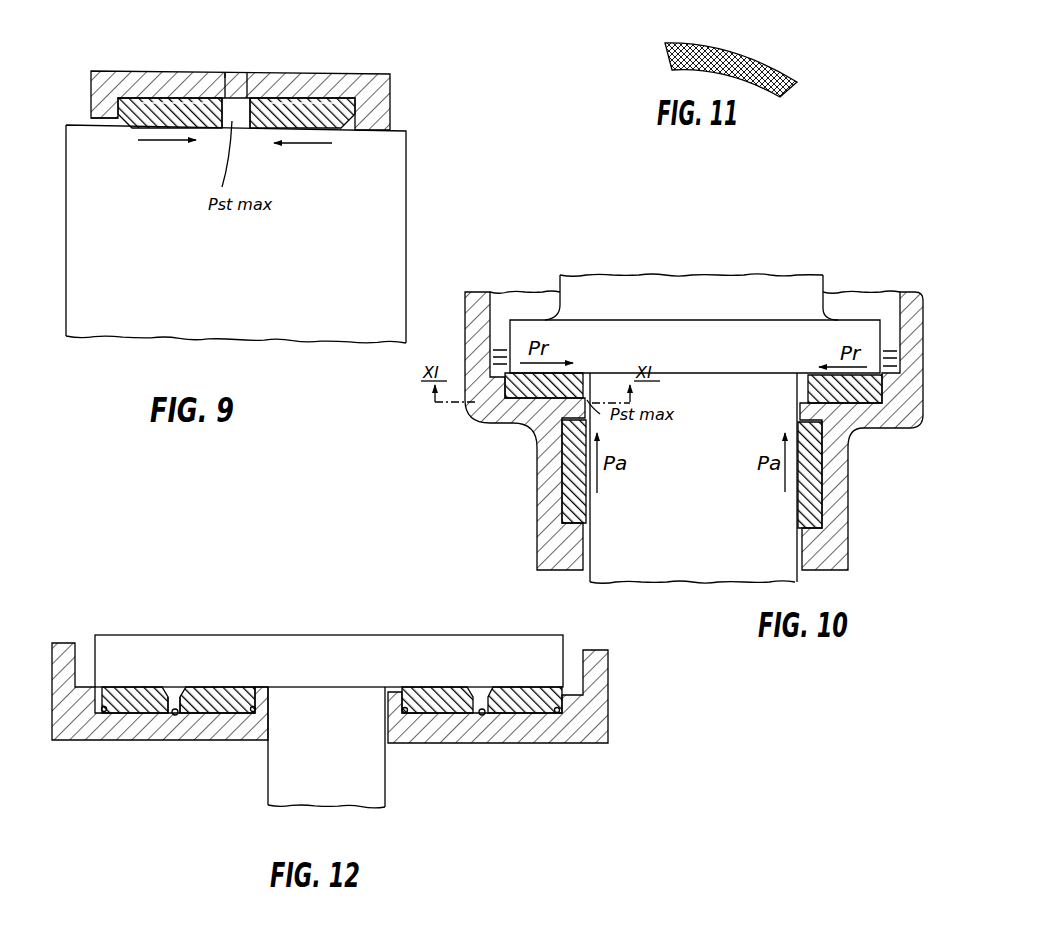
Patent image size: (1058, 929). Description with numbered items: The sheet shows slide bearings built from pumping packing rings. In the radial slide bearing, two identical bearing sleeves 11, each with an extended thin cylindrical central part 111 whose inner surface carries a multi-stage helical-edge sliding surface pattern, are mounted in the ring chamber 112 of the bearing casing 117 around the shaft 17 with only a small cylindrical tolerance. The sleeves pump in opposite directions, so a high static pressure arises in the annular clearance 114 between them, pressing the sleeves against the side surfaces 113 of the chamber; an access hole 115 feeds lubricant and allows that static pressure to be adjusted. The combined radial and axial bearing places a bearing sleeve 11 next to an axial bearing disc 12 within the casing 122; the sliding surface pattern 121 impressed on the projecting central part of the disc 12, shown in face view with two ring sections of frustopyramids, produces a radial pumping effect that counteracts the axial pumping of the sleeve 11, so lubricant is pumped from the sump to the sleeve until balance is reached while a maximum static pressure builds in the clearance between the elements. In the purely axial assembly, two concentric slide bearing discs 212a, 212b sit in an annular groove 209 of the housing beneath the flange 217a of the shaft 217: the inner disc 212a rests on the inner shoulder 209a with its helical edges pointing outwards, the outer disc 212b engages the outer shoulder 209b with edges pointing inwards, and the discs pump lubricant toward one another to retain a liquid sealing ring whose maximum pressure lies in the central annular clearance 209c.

In FIG. 9, the bearing sleeve 11 is at (124, 97).
In FIG. 10, the bearing sleeve 11 is at (810, 488).
In FIG. 9, the thin cylindrical central part 111 is at (167, 104).
In FIG. 9, the ring chamber 112 is at (273, 102).
In FIG. 9, the side surface 113 is at (117, 100).
In FIG. 9, the gap between seal ring halves 114 is at (238, 116).
In FIG. 9, the access hole 115 is at (222, 78).
In FIG. 9, the bearing casing 117 is at (379, 93).
In FIG. 9, the shaft 17 is at (203, 331).
In FIG. 10, the shaft 17 is at (778, 574).
In FIG. 10, the sliding surface pattern 121 is at (566, 371).
In FIG. 11, the sliding surface pattern 121 is at (757, 60).
In FIG. 10, the axial bearing disc 12 is at (808, 393).
In FIG. 10, the housing 122 is at (886, 405).
In FIG. 12, the annular groove 209 is at (175, 716).
In FIG. 12, the inner shoulder 209a is at (251, 712).
In FIG. 12, the outer shoulder 209b is at (103, 712).
In FIG. 12, the annular clearance 209c is at (177, 693).
In FIG. 12, the inner bearing disc 212a is at (225, 685).
In FIG. 12, the outer bearing disc 212b is at (128, 683).
In FIG. 12, the shaft 217 is at (332, 800).
In FIG. 12, the shaft flange 217a is at (388, 643).